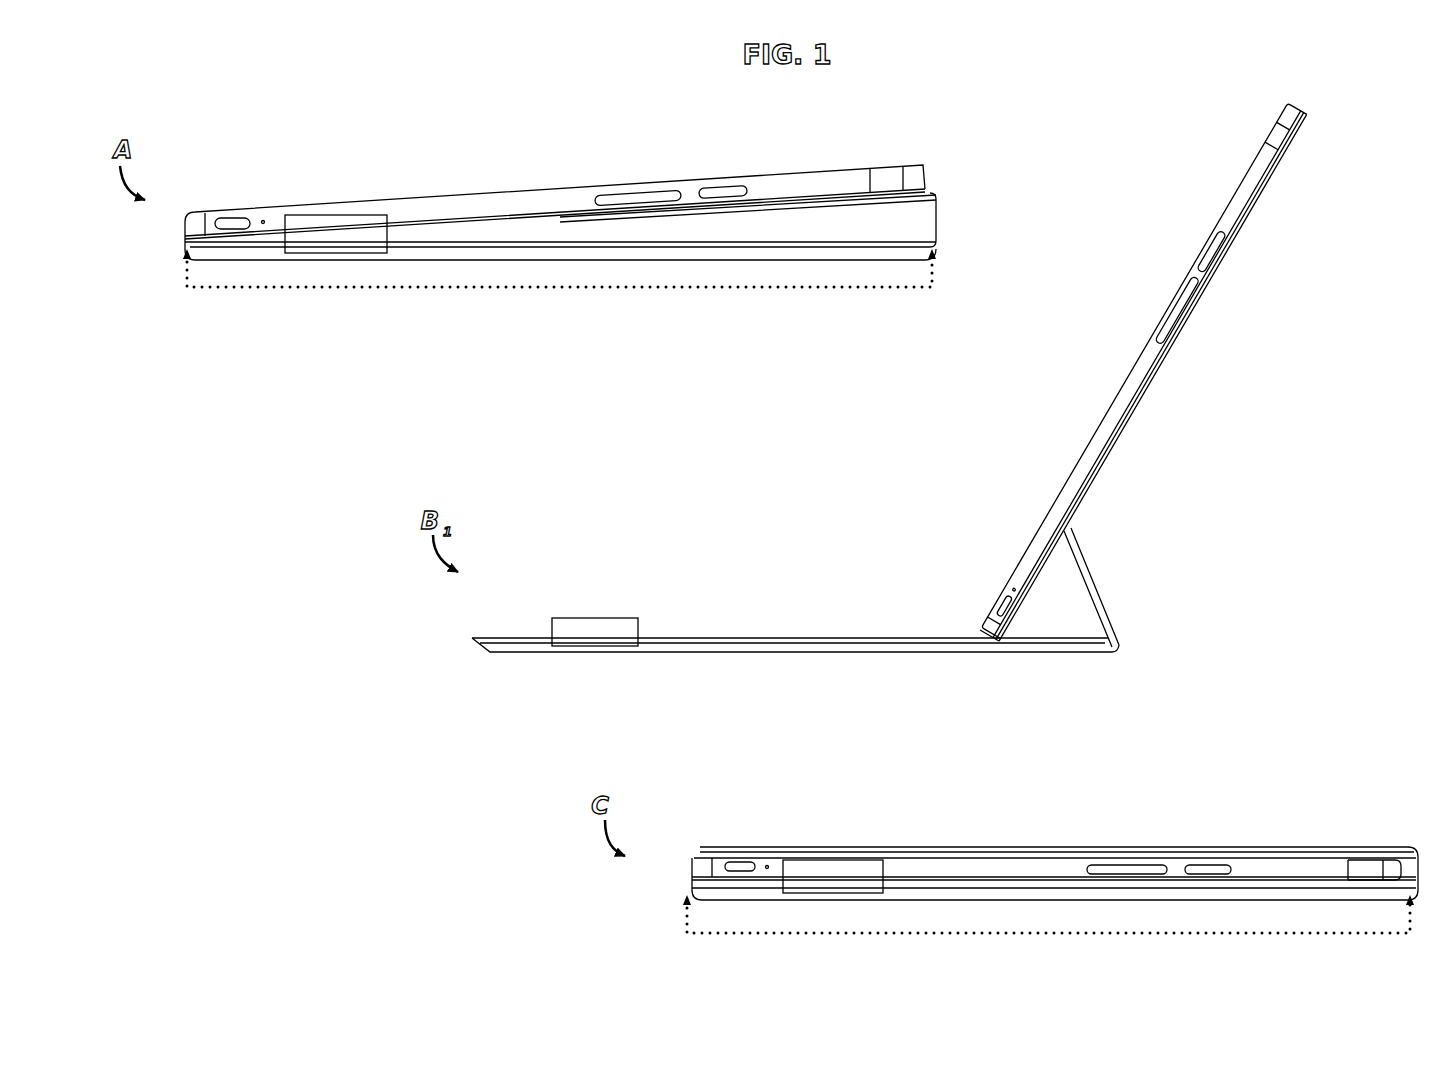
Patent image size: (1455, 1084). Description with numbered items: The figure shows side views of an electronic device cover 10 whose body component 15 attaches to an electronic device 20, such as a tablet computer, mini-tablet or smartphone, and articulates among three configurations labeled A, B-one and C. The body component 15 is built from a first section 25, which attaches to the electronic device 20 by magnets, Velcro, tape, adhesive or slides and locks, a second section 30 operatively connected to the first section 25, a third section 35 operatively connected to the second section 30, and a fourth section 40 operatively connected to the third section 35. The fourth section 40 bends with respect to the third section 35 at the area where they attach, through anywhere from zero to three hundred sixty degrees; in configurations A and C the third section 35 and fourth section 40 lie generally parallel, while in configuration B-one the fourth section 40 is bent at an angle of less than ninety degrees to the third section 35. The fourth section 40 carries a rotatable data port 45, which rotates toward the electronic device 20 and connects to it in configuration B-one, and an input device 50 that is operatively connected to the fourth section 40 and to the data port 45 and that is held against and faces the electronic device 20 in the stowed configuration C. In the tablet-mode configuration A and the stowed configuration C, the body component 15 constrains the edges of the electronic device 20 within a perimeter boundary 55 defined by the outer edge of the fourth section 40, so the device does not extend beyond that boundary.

The electronic device cover 10 is at (1213, 322).
The body component 15 is at (942, 222).
The electronic device 20 is at (924, 168).
The first section 25 is at (1258, 202).
The second section 30 is at (742, 224).
The third section 35 is at (828, 217).
The fourth section 40 is at (830, 262).
The rotatable data port 45 is at (989, 640).
The input device 50 is at (404, 261).
The perimeter boundary 55 is at (798, 608).